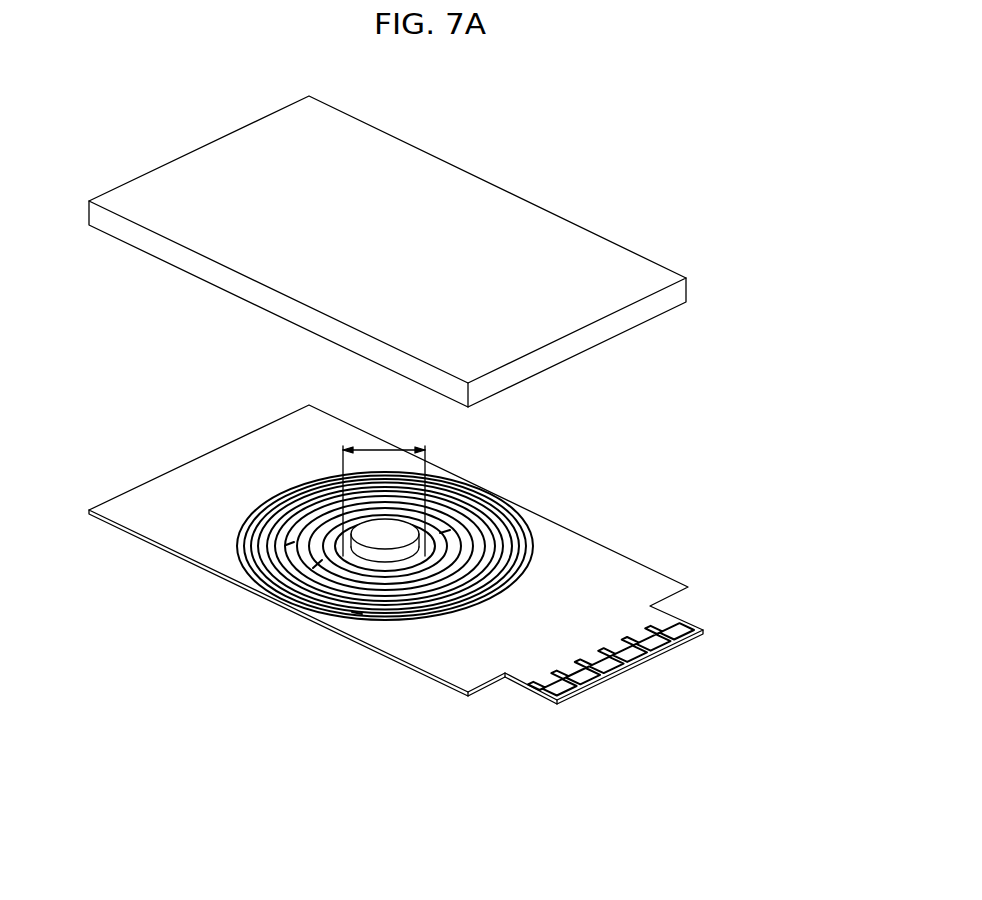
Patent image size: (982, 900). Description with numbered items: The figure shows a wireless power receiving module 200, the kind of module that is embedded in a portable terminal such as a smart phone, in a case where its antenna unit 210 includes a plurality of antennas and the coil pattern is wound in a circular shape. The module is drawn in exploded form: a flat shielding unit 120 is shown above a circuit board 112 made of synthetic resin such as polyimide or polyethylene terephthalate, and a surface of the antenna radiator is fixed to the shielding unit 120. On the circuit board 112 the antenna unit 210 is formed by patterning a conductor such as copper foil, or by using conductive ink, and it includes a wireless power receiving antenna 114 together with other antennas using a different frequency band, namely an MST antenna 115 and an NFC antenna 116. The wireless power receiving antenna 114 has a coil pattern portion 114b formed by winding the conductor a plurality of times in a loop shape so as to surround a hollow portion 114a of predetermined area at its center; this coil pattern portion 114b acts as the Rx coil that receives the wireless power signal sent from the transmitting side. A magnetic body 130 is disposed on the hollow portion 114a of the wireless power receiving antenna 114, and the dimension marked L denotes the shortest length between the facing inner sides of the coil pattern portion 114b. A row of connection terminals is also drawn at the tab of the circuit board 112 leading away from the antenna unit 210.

The circuit board 112 is at (418, 640).
The wireless power receiving antenna 114 is at (313, 568).
The hollow portion 114a is at (313, 568).
The coil pattern portion 114b is at (450, 532).
The MST antenna 115 is at (290, 544).
The NFC antenna 116 is at (355, 610).
The shielding unit 120 is at (617, 333).
The magnetic body 130 is at (395, 528).
The wireless power receiving module 200 is at (764, 505).
The antenna unit 210 is at (598, 688).